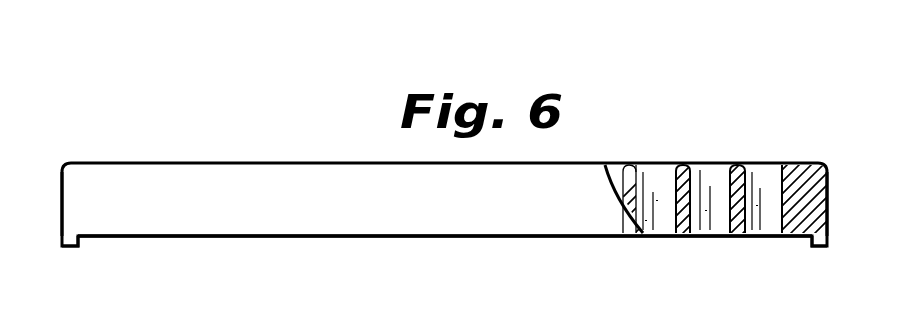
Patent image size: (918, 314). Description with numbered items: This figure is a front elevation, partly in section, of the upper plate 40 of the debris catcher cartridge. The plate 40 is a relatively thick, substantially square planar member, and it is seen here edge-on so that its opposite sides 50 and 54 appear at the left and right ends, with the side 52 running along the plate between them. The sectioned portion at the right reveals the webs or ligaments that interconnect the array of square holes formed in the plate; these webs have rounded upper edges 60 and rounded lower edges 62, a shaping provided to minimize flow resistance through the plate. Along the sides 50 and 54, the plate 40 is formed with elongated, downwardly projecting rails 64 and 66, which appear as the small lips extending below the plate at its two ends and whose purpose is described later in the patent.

The upper plate 40 is at (320, 160).
The side 50 is at (62, 173).
The side 52 is at (211, 220).
The side 54 is at (829, 172).
The rounded upper edges 60 is at (683, 163).
The rounded lower edges 62 is at (683, 237).
The rail 64 is at (67, 247).
The rail 66 is at (818, 247).